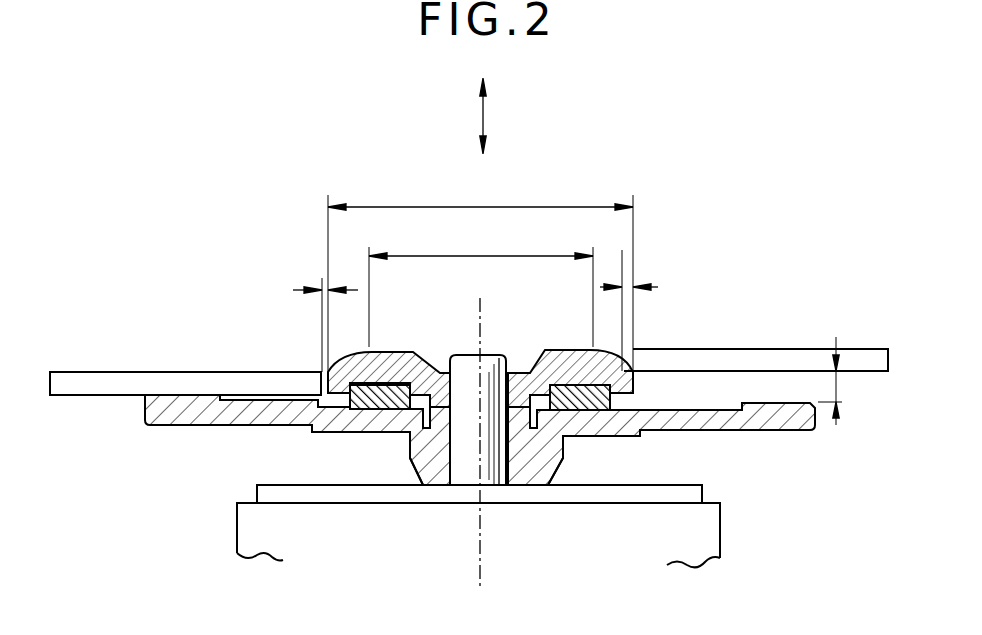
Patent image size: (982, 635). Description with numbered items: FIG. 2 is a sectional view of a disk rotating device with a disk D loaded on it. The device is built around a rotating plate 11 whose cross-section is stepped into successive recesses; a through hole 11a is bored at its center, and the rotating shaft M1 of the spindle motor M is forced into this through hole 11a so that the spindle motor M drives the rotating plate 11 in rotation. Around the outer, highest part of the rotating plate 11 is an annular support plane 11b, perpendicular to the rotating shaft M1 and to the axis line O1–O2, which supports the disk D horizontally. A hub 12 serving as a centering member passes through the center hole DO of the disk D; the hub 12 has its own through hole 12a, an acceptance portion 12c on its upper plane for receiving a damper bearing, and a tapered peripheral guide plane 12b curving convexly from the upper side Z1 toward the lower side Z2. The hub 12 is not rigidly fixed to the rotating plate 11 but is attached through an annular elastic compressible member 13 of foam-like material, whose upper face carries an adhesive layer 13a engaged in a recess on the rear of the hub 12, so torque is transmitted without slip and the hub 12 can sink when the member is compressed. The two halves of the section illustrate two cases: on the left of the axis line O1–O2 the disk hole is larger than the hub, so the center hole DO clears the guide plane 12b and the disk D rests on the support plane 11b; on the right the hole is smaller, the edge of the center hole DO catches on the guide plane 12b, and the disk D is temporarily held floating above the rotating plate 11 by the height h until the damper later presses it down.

The rotating plate 11 is at (781, 415).
The through hole 11a is at (414, 468).
The support plane 11b is at (163, 393).
The hub 12 is at (543, 350).
The through hole 12a is at (456, 378).
The guide plane 12b is at (637, 385).
The acceptance portion 12c is at (425, 352).
The elastic compressible member 13 is at (382, 410).
The adhesive layer 13a is at (594, 352).
The disk D is at (97, 372).
The center hole DO is at (320, 381).
The spindle motor M is at (704, 537).
The rotating shaft M1 is at (492, 473).
The axis line O1–O2 O1 is at (481, 354).
The axis line O1– O2 is at (481, 528).
The upper side Z1 is at (504, 109).
The lower side Z2 is at (504, 145).
The disk lift height h is at (838, 381).